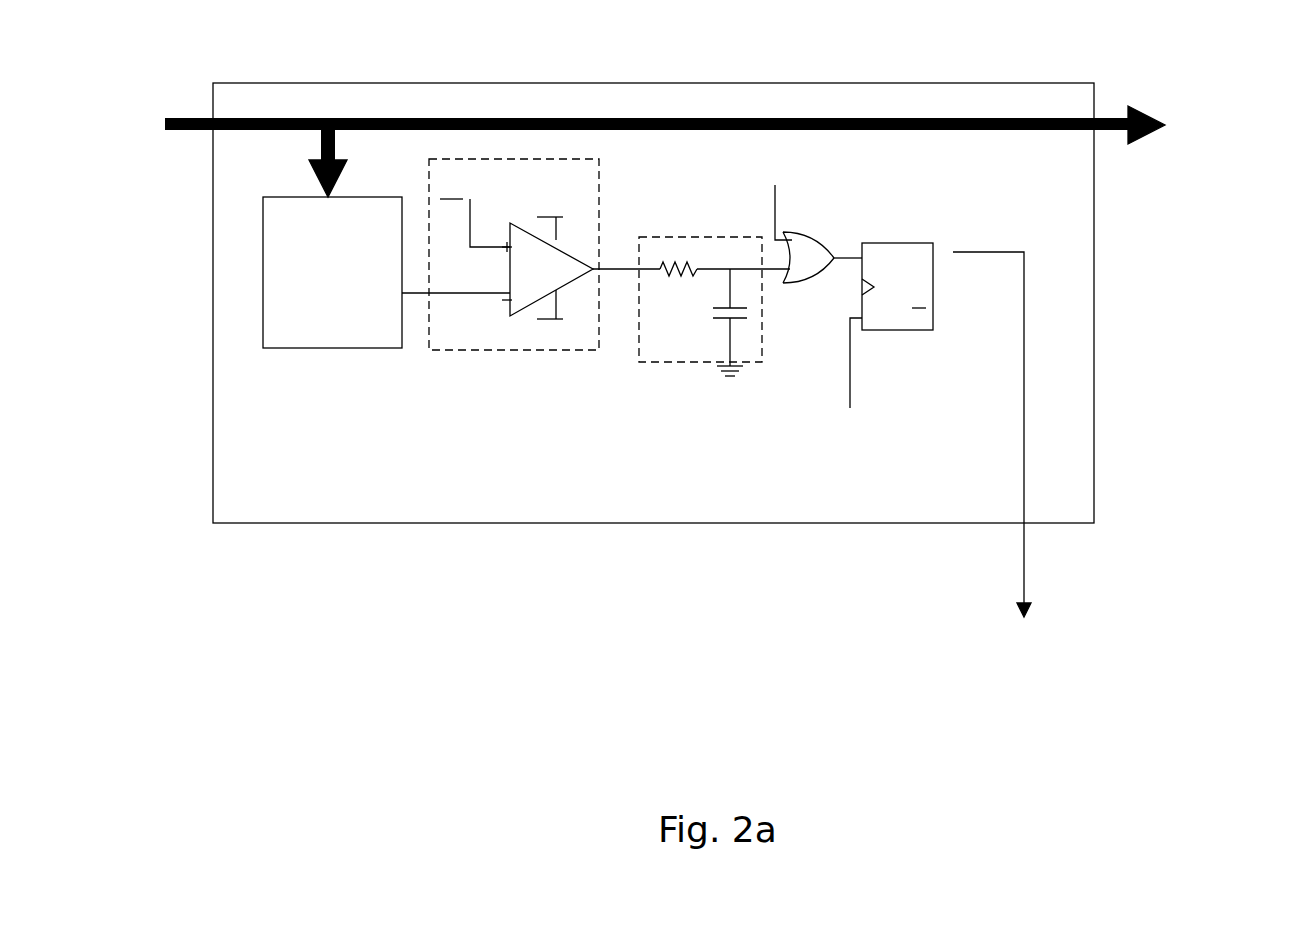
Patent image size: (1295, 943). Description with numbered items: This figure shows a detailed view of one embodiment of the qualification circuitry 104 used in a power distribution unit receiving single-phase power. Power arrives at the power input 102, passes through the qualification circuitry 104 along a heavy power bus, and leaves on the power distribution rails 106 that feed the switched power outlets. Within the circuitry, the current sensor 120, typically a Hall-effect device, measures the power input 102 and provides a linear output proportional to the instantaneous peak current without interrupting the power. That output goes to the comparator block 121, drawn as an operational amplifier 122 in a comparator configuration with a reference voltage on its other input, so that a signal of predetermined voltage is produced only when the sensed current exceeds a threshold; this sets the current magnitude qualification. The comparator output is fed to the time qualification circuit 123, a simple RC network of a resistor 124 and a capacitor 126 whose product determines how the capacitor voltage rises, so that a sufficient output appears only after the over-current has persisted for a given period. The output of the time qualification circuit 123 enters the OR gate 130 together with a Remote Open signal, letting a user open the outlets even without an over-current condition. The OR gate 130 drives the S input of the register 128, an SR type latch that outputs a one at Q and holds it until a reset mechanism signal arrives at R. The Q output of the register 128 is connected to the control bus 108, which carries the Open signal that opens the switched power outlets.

The power input 102 is at (611, 139).
The qualification circuitry 104 is at (740, 83).
The power distribution rails 106 is at (1198, 137).
The control bus 108 is at (1020, 466).
The current sensor 120 is at (357, 339).
The comparator block 121 is at (504, 294).
The operational amplifier 122 is at (503, 282).
The time qualification circuit 123 is at (684, 307).
The resistor 124 is at (678, 265).
The capacitor 126 is at (695, 322).
The register 128 is at (945, 296).
The OR gate 130 is at (828, 238).